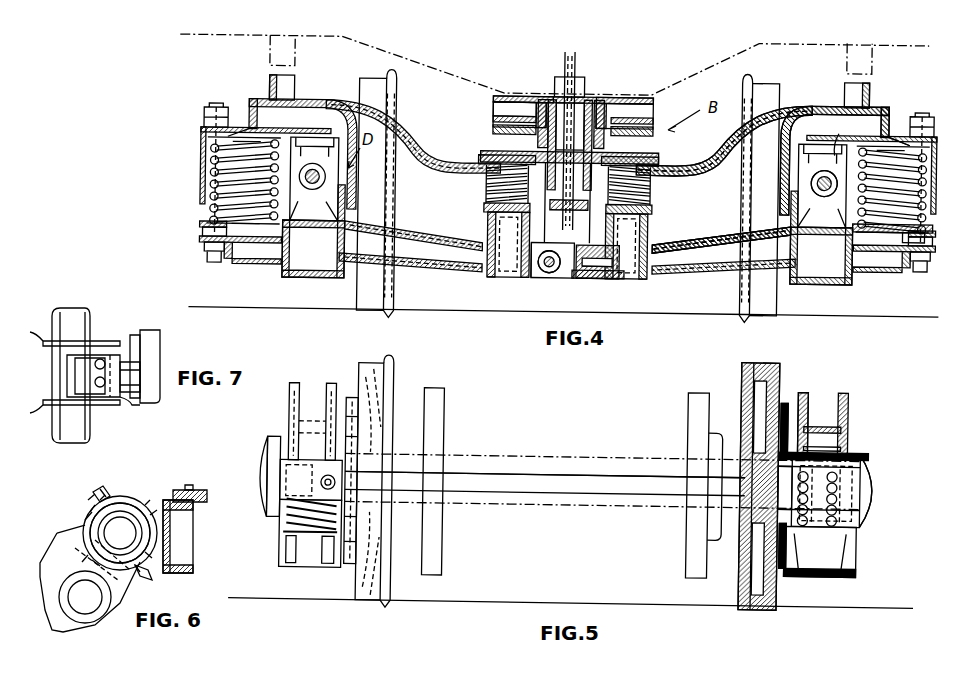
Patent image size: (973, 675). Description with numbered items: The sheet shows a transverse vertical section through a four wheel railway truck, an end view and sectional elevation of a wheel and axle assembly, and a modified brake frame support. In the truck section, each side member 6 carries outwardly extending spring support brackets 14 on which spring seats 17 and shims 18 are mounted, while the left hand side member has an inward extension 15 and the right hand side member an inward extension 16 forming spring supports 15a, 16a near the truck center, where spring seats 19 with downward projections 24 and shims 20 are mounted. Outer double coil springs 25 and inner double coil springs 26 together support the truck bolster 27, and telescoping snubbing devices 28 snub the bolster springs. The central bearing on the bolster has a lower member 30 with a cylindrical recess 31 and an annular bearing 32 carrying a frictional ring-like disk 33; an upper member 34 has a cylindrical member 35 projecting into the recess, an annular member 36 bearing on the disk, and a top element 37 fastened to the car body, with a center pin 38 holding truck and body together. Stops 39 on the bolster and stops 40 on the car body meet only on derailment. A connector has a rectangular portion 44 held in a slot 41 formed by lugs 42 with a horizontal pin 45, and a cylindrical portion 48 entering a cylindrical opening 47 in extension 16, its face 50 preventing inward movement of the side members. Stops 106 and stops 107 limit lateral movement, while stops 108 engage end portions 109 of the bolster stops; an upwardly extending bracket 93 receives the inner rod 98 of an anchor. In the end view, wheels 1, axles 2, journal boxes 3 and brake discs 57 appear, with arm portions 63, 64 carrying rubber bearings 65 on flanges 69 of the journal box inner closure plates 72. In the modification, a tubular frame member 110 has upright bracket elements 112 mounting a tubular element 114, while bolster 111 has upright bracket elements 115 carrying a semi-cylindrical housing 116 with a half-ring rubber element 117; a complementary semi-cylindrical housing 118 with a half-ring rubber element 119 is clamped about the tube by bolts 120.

In FIG. 4, the stops 40 is at (268, 50).
In FIG. 4, the stops 39 is at (268, 84).
In FIG. 4, the truck bolster 27 is at (692, 165).
In FIG. 4, the telescoping snubbing devices 28 is at (203, 154).
In FIG. 4, the double coil springs 25 is at (272, 202).
In FIG. 4, the spring support brackets 14 is at (257, 268).
In FIG. 4, the stops 106 is at (567, 234).
In FIG. 4, the side members 6 is at (858, 286).
In FIG. 4, the stops 107 is at (352, 192).
In FIG. 4, the inward extension 15 is at (450, 272).
In FIG. 4, the inward extension 16 is at (700, 268).
In FIG. 4, the spring seats 19 is at (674, 241).
In FIG. 4, the shims 20 is at (666, 248).
In FIG. 4, the stops 108 is at (758, 225).
In FIG. 4, the end portions 109 is at (748, 178).
In FIG. 4, the double coil springs 26 is at (480, 186).
In FIG. 4, the spring support 15a is at (496, 276).
In FIG. 4, the spring support 16a is at (660, 279).
In FIG. 4, the center pin 38 is at (572, 96).
In FIG. 4, the cylindrical member 35 is at (548, 100).
In FIG. 4, the top element 37 is at (628, 100).
In FIG. 4, the upper member 34 is at (492, 112).
In FIG. 4, the ring-like disk 33 is at (492, 123).
In FIG. 4, the annular bearing 32 is at (492, 132).
In FIG. 4, the annular member 36 is at (652, 119).
In FIG. 4, the lower member 30 is at (631, 140).
In FIG. 4, the central cylindrical recess 31 is at (598, 139).
In FIG. 4, the slot 41 is at (546, 245).
In FIG. 4, the lugs 42 is at (553, 276).
In FIG. 4, the downward projections 24 is at (533, 278).
In FIG. 4, the rectangular portion 44 is at (578, 245).
In FIG. 4, the face 50 is at (592, 252).
In FIG. 4, the horizontal pin 45 is at (587, 280).
In FIG. 4, the cylindrical opening 47 is at (612, 276).
In FIG. 4, the cylindrical portion 48 is at (616, 270).
In FIG. 4, the inner rod 98 is at (836, 150).
In FIG. 4, the bracket 93 is at (826, 196).
In FIG. 4, the spring seats 17 is at (922, 226).
In FIG. 4, the shims 18 is at (921, 236).
In FIG. 5, the brake discs 57 is at (443, 405).
In FIG. 5, the journal box inner closure plates 72 is at (722, 440).
In FIG. 5, the axles 2 is at (642, 463).
In FIG. 5, the wheels 1 is at (773, 378).
In FIG. 5, the vertically spaced portion 63 is at (790, 405).
In FIG. 5, the rubber bearings 65 is at (797, 432).
In FIG. 5, the flanges 69 is at (735, 433).
In FIG. 5, the vertically spaced portion 64 is at (784, 566).
In FIG. 5, the journal boxes 3 is at (857, 522).
In FIG. 7, the tubular frame member 110 is at (95, 316).
In FIG. 6, the tubular frame member 110 is at (92, 614).
In FIG. 7, the tubular element 114 is at (100, 341).
In FIG. 6, the tubular element 114 is at (119, 533).
In FIG. 7, the upright bracket elements 112 is at (140, 340).
In FIG. 6, the upright bracket elements 112 is at (135, 612).
In FIG. 7, the bolts 120 is at (100, 390).
In FIG. 6, the bolts 120 is at (142, 577).
In FIG. 7, the bolster 111 is at (160, 335).
In FIG. 6, the bolster 111 is at (195, 561).
In FIG. 7, the upright bracket elements 115 is at (135, 370).
In FIG. 6, the upright bracket elements 115 is at (150, 503).
In FIG. 7, the semi-cylindrical housing 116 is at (140, 402).
In FIG. 6, the semi-cylindrical housing 116 is at (135, 501).
In FIG. 6, the half-ring rubber element 117 is at (104, 490).
In FIG. 6, the half-ring rubber element 119 is at (89, 503).
In FIG. 6, the complementary semi-cylindrical housing 118 is at (86, 526).